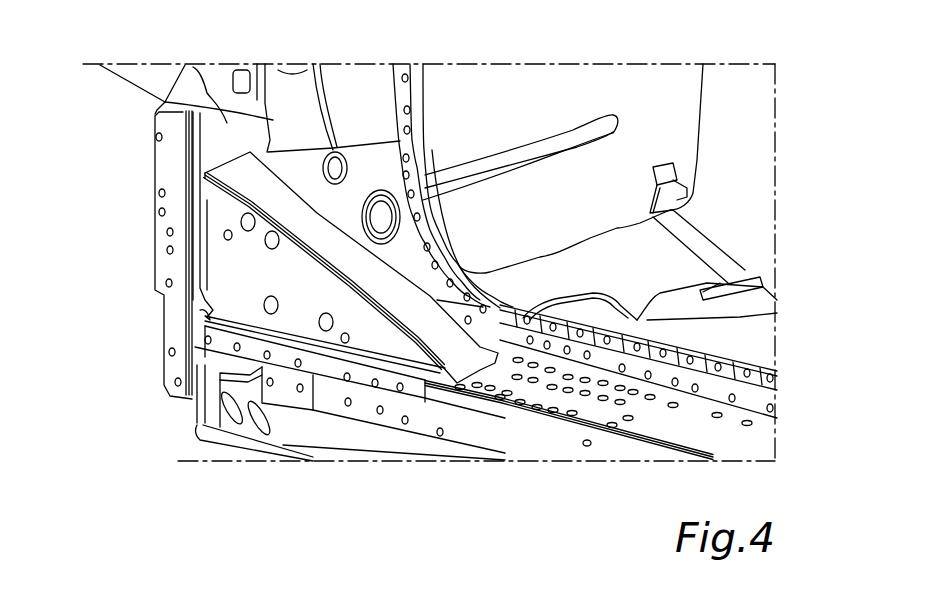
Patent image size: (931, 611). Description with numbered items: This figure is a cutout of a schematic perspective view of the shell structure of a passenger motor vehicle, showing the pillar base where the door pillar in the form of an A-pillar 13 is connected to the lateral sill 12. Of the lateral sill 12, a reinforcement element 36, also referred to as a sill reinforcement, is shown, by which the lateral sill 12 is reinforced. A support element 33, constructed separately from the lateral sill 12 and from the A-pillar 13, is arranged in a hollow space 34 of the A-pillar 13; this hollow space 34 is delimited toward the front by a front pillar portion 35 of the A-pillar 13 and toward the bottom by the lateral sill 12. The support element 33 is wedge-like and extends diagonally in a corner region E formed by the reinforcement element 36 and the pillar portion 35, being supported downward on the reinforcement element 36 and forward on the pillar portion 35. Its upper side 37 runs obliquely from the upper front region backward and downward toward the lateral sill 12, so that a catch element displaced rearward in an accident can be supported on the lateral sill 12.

The lateral sill 12 is at (538, 391).
The A-pillar 13 is at (164, 153).
The support element 33 is at (264, 332).
The hollow space 34 is at (205, 157).
The front pillar portion 35 is at (180, 104).
The reinforcement element 36 is at (753, 445).
The upper side 37 is at (320, 217).
The corner region E is at (195, 292).